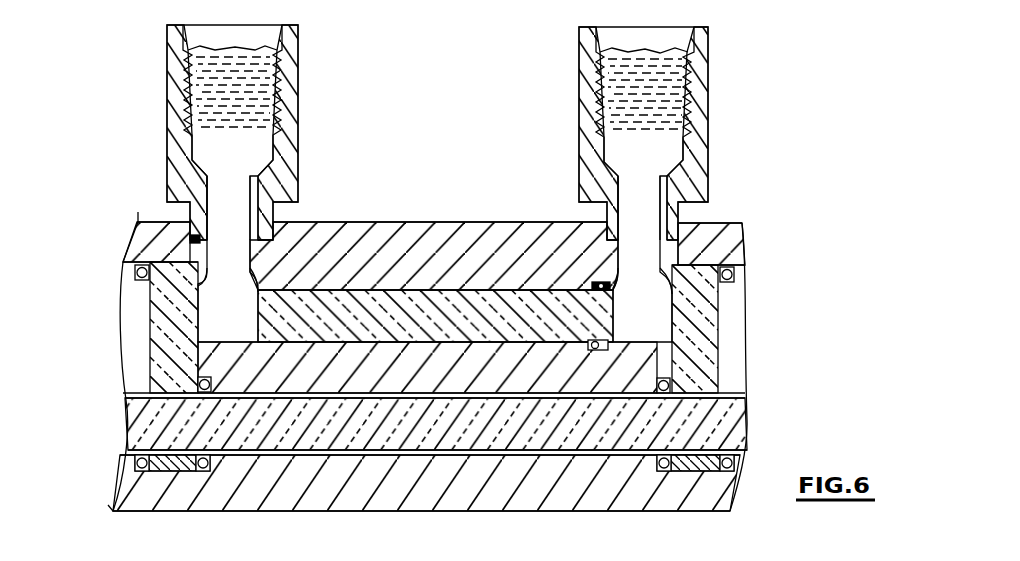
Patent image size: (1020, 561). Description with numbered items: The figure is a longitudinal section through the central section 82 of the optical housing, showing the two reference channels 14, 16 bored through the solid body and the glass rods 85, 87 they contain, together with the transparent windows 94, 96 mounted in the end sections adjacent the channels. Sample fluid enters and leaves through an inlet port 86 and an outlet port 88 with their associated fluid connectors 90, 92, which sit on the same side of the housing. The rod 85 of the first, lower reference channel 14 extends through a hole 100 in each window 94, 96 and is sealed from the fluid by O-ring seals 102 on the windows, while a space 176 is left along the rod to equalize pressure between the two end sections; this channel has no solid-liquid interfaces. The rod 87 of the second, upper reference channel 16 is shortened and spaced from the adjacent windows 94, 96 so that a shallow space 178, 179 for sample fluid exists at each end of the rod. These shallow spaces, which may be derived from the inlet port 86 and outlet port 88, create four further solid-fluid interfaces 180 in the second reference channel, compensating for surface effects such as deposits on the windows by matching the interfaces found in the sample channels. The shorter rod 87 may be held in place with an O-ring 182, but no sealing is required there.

The central section 82 is at (444, 150).
The fluid connector 90 is at (167, 83).
The fluid connector 92 is at (581, 70).
The reference channel 16 is at (476, 290).
The glass rod 87 is at (541, 292).
The inlet port 86 is at (238, 247).
The outlet port 88 is at (649, 252).
The solid-fluid interfaces 180 is at (203, 284).
The shallow space 179 is at (243, 330).
The shallow space 178 is at (658, 330).
The window 94 is at (150, 322).
The window 96 is at (718, 320).
The hole 100 is at (160, 400).
The O-ring 182 is at (588, 348).
The O-ring seals 102 is at (197, 473).
The space 176 is at (378, 457).
The reference channel 14 is at (493, 457).
The glass rod 85 is at (578, 440).